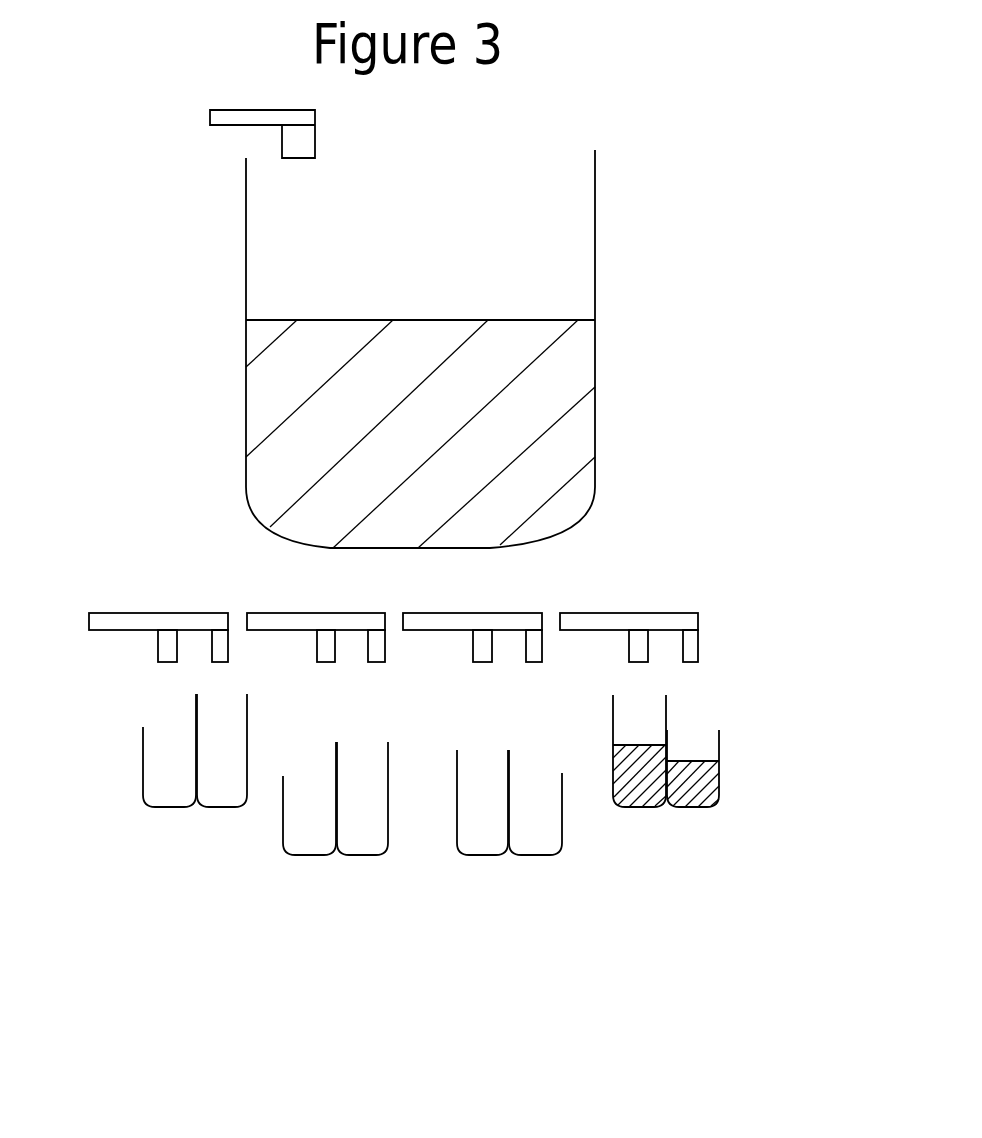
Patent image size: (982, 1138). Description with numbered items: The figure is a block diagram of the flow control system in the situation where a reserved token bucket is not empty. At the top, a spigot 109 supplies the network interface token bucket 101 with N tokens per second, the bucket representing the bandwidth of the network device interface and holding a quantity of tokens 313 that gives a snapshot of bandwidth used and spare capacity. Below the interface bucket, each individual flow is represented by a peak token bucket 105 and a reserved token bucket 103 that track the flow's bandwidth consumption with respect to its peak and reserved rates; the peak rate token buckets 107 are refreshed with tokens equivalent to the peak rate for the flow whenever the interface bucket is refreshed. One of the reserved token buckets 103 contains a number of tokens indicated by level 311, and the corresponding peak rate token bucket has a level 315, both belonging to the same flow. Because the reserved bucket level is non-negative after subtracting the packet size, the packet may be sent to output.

The spigot 109 is at (210, 118).
The token bucket 101 is at (595, 280).
The liquid reagent 313 is at (595, 320).
The peak rate token buckets 107 is at (670, 613).
The peak token bucket 105 is at (360, 855).
The reserved token bucket 103 is at (693, 807).
The level 315 is at (613, 745).
The level 311 is at (719, 761).